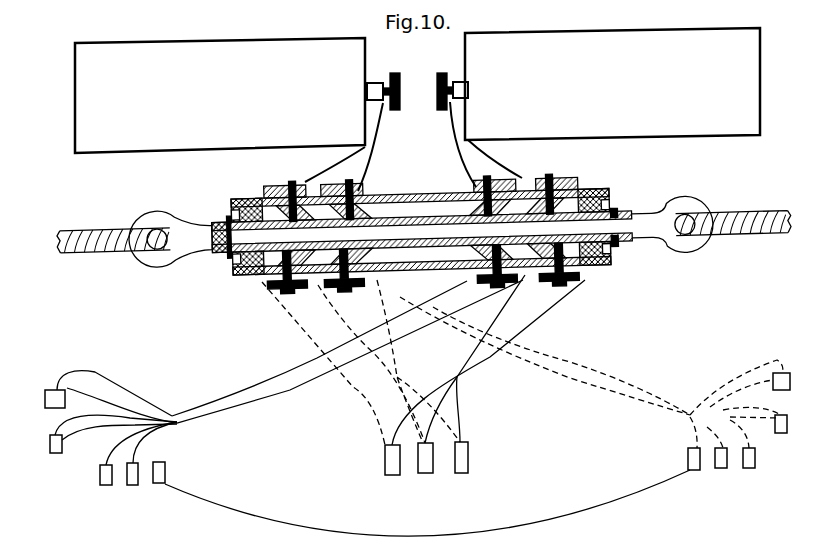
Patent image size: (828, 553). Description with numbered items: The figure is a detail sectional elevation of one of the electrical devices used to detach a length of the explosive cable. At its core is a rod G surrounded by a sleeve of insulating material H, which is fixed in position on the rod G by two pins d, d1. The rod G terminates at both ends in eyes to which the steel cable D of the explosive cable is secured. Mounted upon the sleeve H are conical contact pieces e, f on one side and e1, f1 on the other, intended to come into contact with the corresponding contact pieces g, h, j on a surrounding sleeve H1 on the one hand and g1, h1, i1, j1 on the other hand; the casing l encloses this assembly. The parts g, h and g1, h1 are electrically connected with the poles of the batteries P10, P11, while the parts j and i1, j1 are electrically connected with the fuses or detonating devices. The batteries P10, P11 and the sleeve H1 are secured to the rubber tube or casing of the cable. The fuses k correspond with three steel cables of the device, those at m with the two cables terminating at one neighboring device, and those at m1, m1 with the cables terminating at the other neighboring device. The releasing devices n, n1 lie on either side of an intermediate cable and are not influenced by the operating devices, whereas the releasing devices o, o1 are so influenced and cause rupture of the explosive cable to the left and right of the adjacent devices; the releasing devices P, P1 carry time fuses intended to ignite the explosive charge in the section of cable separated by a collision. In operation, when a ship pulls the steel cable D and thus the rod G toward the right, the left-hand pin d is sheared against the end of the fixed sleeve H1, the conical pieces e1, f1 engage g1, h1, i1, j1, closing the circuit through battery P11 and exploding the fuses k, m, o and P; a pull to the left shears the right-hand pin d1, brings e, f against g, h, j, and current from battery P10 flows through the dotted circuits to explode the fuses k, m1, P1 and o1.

The battery P10 is at (237, 95).
The battery P11 is at (598, 84).
The steel cable D is at (112, 232).
The rod G is at (199, 237).
The pin d is at (228, 222).
The pin d1 is at (615, 254).
The sleeve of insulating material H is at (620, 212).
The sleeve H1 is at (404, 282).
The casing l is at (242, 277).
The contact piece g is at (275, 193).
The conical contact piece e is at (293, 179).
The conical contact piece e1 is at (552, 175).
The contact piece g1 is at (578, 190).
The contact piece h is at (364, 190).
The contact piece h1 is at (498, 186).
The conical contact piece f is at (383, 197).
The conical contact piece f1 is at (458, 192).
The contact piece j is at (317, 283).
The contact piece j1 is at (471, 282).
The contact piece i1 is at (578, 273).
The fuse k is at (385, 458).
The fuse m is at (101, 478).
The releasing device n is at (160, 484).
The releasing device o is at (38, 452).
The releasing device with time fuse P is at (47, 402).
The releasing device with time fuse P1 is at (775, 380).
The releasing device o1 is at (780, 434).
The fuse m1 is at (752, 468).
The releasing device n1 is at (688, 461).